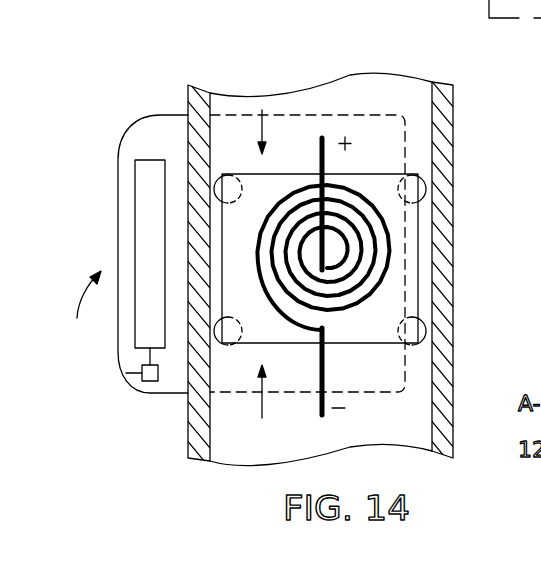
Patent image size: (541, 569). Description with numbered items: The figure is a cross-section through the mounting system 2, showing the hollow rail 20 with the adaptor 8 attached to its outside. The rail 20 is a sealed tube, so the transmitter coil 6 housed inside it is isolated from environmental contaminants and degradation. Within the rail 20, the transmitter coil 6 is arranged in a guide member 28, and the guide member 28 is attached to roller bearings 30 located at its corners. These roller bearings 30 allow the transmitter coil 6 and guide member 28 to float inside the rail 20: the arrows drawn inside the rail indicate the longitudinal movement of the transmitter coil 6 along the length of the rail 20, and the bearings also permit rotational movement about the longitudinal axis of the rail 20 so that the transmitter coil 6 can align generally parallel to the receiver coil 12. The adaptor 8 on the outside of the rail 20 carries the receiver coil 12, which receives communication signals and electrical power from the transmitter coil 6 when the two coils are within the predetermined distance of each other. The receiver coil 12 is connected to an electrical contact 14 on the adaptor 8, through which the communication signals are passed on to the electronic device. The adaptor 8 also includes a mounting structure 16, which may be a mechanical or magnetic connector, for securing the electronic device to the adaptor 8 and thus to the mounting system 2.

The mounting system 2 is at (130, 39).
The transmitter coil 6 is at (397, 247).
The adaptor 8 is at (164, 113).
The receiver coil 12 is at (150, 226).
The electrical contact 14 is at (152, 390).
The mounting structure 16 is at (83, 313).
The rail 20 is at (445, 427).
The guide member 28 is at (410, 268).
The roller bearings 30 is at (214, 182).